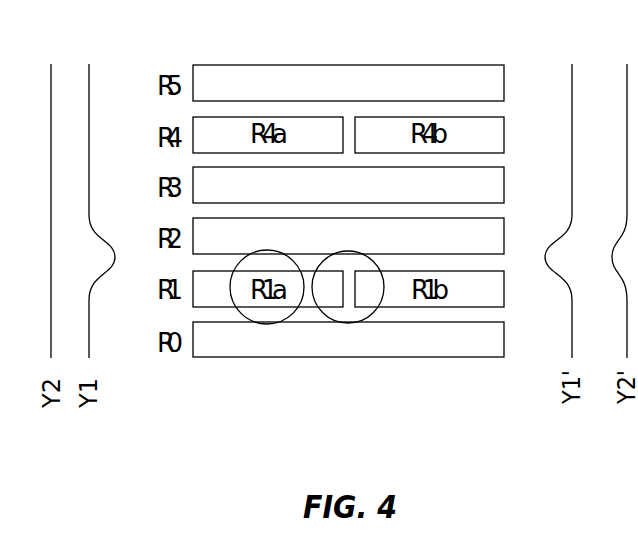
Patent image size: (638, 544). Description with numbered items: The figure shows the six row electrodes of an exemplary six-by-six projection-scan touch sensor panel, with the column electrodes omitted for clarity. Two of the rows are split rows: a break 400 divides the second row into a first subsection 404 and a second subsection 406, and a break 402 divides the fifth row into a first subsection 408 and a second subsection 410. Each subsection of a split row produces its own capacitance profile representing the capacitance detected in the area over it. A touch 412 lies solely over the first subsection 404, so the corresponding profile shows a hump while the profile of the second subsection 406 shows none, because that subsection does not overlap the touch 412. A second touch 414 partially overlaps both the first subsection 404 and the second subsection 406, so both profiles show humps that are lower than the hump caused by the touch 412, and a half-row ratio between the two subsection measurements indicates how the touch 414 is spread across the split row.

The break 400 is at (352, 293).
The break 402 is at (350, 127).
The subsection R1a 404 is at (218, 287).
The subsection R1b 406 is at (478, 288).
The subsection R4a 408 is at (218, 135).
The subsection R4b 410 is at (478, 135).
The touch 412 is at (267, 324).
The second touch 414 is at (362, 310).